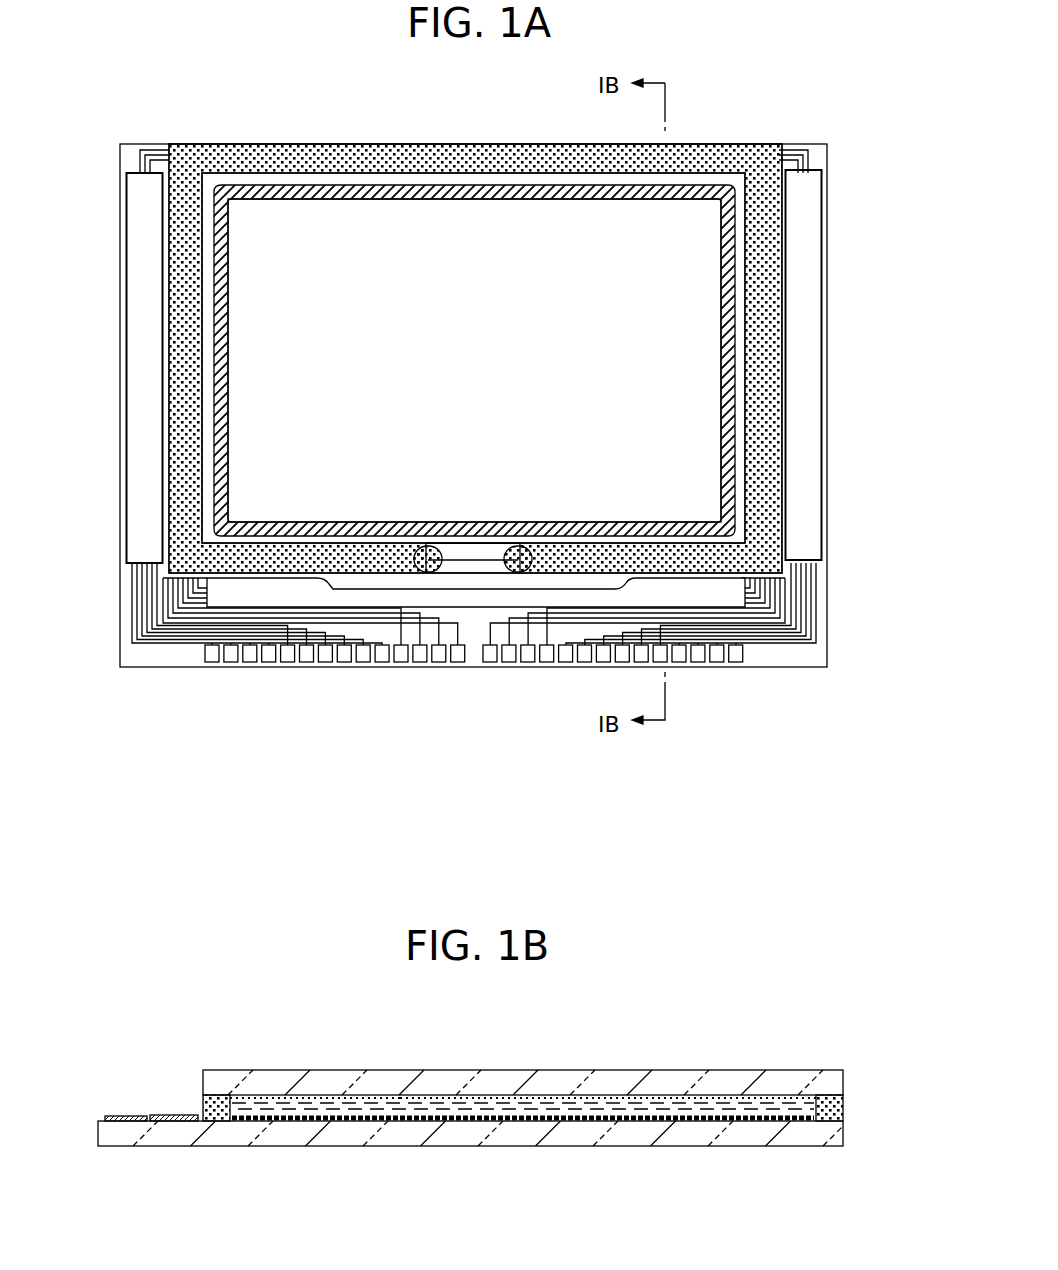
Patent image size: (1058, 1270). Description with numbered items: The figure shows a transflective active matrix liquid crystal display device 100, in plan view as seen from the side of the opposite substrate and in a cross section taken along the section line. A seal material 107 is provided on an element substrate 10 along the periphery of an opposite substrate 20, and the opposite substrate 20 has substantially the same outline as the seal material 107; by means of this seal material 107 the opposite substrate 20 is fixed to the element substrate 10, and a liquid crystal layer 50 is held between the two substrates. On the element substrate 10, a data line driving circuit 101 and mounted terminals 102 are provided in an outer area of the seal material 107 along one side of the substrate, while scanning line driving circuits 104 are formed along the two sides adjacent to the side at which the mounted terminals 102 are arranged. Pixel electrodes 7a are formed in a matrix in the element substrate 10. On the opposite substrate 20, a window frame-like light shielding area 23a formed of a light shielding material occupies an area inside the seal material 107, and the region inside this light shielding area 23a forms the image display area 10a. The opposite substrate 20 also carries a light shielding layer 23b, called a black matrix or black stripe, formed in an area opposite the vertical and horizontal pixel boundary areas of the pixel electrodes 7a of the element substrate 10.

In FIG. 1A, the liquid crystal display device 100 is at (780, 110).
In FIG. 1B, the liquid crystal display device 100 is at (700, 1022).
In FIG. 1A, the element substrate 10 is at (838, 500).
In FIG. 1B, the element substrate 10 is at (728, 1135).
In FIG. 1A, the image display area 10a is at (277, 302).
In FIG. 1A, the opposite substrate 20 is at (794, 535).
In FIG. 1B, the opposite substrate 20 is at (823, 1075).
In FIG. 1A, the light shielding area 23a is at (722, 270).
In FIG. 1B, the light shielding area 23a is at (247, 1090).
In FIG. 1B, the light shielding layer 23b is at (572, 1093).
In FIG. 1B, the liquid crystal layer 50 is at (570, 1108).
In FIG. 1B, the pixel electrodes 7a is at (442, 1122).
In FIG. 1A, the data line driving circuit 101 is at (252, 600).
In FIG. 1B, the data line driving circuit 101 is at (178, 1115).
In FIG. 1A, the mounted terminals 102 is at (385, 662).
In FIG. 1B, the mounted terminals 102 is at (125, 1116).
In FIG. 1A, the scanning line driving circuits 104 is at (140, 376).
In FIG. 1A, the seal material 107 is at (765, 348).
In FIG. 1B, the seal material 107 is at (215, 1122).